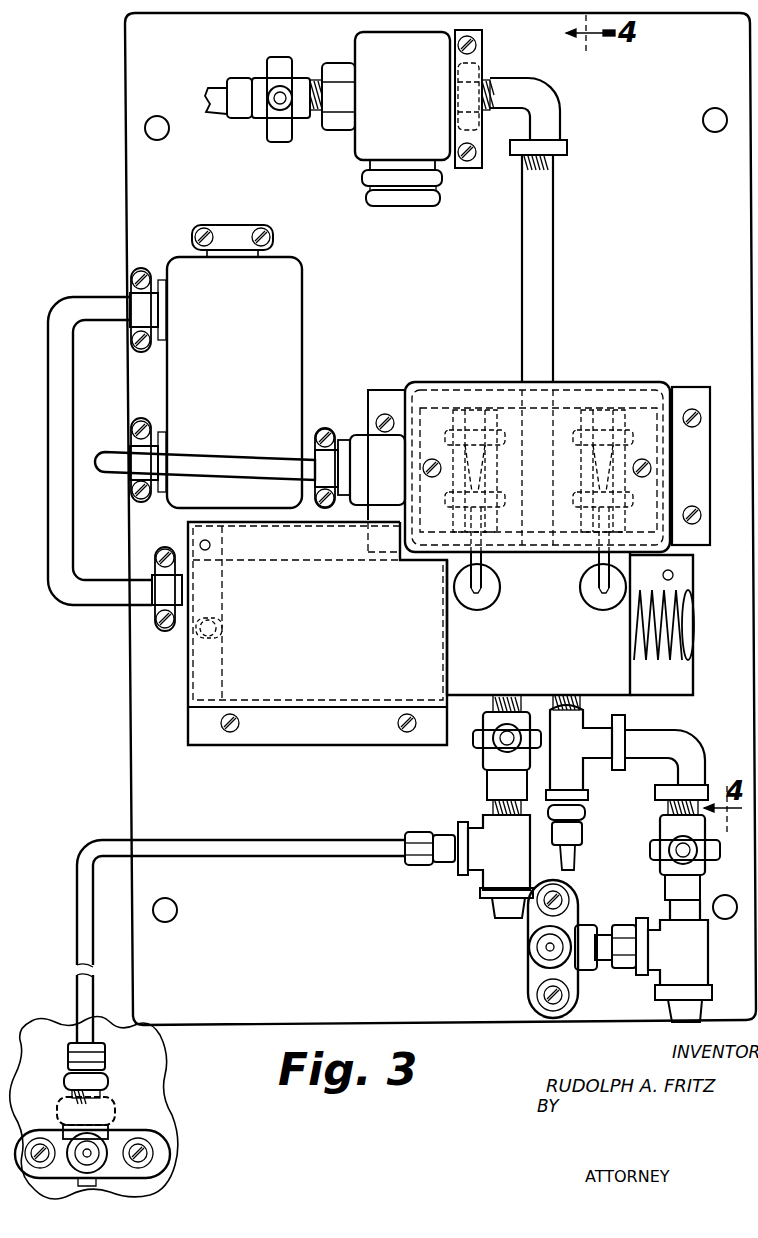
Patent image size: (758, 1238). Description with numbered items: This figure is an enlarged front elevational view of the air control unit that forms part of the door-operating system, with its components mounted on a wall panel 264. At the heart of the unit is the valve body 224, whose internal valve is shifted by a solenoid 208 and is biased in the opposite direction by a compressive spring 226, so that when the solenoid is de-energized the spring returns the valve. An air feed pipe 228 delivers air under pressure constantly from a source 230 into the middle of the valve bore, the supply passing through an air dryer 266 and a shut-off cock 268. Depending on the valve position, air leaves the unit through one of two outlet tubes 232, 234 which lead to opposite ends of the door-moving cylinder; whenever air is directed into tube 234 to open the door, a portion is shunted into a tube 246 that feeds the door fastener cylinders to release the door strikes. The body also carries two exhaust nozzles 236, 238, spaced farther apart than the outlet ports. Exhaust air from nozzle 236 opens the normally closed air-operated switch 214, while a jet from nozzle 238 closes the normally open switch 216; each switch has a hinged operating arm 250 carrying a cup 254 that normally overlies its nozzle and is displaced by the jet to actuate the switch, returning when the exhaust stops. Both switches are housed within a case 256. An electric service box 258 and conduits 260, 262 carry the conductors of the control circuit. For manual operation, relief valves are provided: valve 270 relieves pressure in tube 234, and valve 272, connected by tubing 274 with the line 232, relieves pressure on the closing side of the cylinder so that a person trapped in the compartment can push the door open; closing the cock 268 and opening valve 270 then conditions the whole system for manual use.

The solenoid 208 is at (322, 687).
The normally closed air-operated electric switch 214 is at (625, 425).
The normally open air-operated switch 216 is at (452, 425).
The air control unit 224 is at (461, 655).
The compressive spring 226 is at (700, 590).
The air feed pipe 228 is at (523, 281).
The source of air under pressure 230 is at (219, 90).
The outlet port tube 232 is at (504, 910).
The outlet port tube 234 is at (697, 1021).
The exhaust nozzle 236 is at (600, 590).
The exhaust nozzle 238 is at (484, 594).
The tube 246 is at (578, 866).
The operating arm 250 is at (482, 542).
The cup 254 is at (478, 610).
The case 256 is at (416, 398).
The electric service box 258 is at (292, 297).
The conduit 260 is at (62, 369).
The conduit 262 is at (109, 461).
The wall panel 264 is at (138, 208).
The air dryer 266 is at (366, 140).
The shut-off cock 268 is at (262, 118).
The relief valve 270 is at (546, 962).
The relief valve 272 is at (108, 1142).
The tubing 274 is at (300, 858).